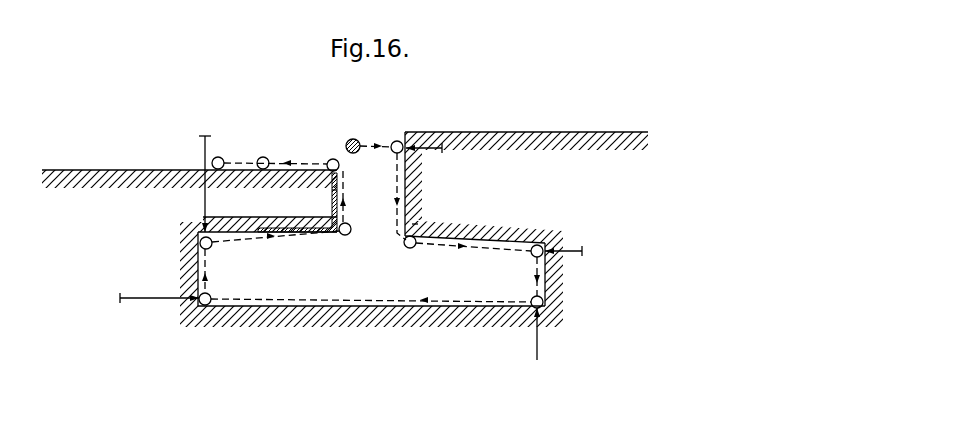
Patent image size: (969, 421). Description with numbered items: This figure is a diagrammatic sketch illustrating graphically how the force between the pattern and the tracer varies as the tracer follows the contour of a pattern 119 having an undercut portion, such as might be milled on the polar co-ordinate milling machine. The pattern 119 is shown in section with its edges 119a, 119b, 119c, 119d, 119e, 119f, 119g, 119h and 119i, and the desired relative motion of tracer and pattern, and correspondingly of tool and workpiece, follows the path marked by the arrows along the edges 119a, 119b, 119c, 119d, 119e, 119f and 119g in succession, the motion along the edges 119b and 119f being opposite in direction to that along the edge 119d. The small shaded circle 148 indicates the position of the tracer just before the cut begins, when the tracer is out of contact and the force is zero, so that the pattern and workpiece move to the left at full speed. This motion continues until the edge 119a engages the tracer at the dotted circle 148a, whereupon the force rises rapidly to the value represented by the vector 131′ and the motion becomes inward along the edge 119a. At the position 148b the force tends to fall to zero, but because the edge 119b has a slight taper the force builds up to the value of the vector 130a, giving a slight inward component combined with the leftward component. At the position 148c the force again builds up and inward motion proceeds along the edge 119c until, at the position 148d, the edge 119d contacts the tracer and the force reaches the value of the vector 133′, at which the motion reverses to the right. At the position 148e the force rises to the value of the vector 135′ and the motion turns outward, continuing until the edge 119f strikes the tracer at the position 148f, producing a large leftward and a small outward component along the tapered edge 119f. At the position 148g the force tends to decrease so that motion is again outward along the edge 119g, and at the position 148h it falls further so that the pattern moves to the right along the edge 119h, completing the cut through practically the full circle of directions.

The pattern 119 is at (345, 214).
The edge of the pattern 119a is at (404, 172).
The tapered edge of the pattern 119b is at (430, 239).
The edge of the pattern 119c is at (542, 264).
The edge of the pattern 119d is at (447, 306).
The edge of the pattern 119e is at (206, 270).
The slightly tapered edge of the pattern 119f is at (298, 233).
The edge of the pattern 119g is at (338, 201).
The edge of the pattern 119h is at (306, 170).
The edge of the pattern 119i is at (518, 133).
The small shaded circle 148 is at (351, 139).
The dotted circle 148a is at (398, 141).
The position of the tracer 148b is at (406, 248).
The position of the tracer 148c is at (531, 254).
The position of the tracer 148d is at (531, 300).
The position of the tracer 148e is at (212, 297).
The position of the tracer 148f is at (212, 245).
The position of the tracer 148g is at (348, 235).
The position of the tracer 148h is at (340, 164).
The force vector 130a is at (415, 226).
The force vector 131′ is at (438, 152).
The force vector 133′ is at (540, 343).
The force vector 135′ is at (148, 299).